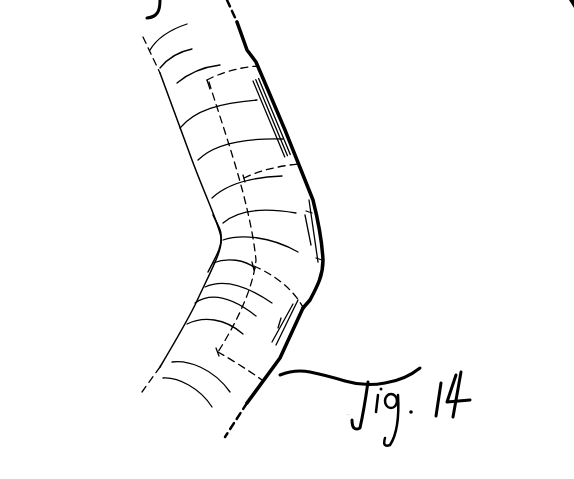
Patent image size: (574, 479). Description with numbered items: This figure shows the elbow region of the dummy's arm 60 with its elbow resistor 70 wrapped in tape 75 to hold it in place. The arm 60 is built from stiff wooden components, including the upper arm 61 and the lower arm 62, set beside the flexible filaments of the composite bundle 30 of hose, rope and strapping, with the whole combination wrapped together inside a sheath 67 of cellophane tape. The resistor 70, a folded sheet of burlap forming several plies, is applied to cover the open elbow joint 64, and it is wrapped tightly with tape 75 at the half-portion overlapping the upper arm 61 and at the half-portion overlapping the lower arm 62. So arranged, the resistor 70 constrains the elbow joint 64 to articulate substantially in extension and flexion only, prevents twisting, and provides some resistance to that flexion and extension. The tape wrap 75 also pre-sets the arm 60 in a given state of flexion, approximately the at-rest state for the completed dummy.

The composite bundle 30 is at (170, 215).
The arm 60 is at (157, 167).
The upper arm 61 is at (237, 32).
The lower arm 62 is at (190, 352).
The sheath of cellophane tape 67 is at (200, 218).
The elbow joint 64 is at (190, 267).
The resistor 70 is at (325, 212).
The tape 75 is at (288, 134).